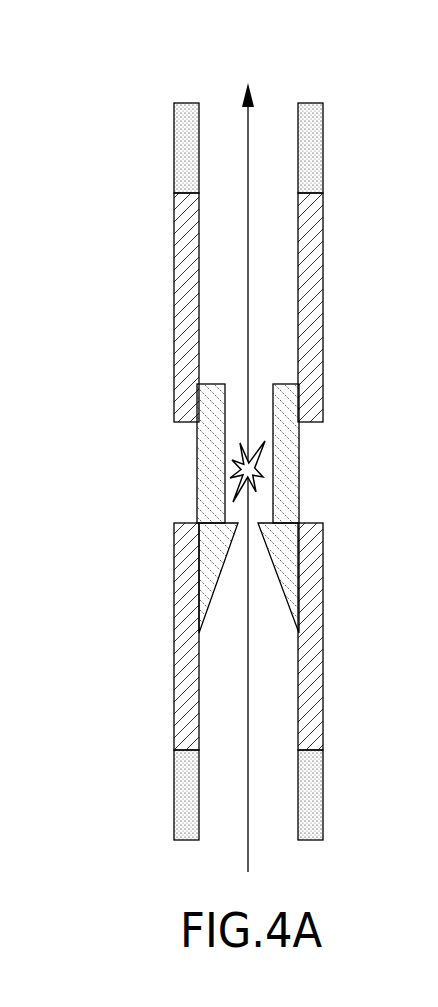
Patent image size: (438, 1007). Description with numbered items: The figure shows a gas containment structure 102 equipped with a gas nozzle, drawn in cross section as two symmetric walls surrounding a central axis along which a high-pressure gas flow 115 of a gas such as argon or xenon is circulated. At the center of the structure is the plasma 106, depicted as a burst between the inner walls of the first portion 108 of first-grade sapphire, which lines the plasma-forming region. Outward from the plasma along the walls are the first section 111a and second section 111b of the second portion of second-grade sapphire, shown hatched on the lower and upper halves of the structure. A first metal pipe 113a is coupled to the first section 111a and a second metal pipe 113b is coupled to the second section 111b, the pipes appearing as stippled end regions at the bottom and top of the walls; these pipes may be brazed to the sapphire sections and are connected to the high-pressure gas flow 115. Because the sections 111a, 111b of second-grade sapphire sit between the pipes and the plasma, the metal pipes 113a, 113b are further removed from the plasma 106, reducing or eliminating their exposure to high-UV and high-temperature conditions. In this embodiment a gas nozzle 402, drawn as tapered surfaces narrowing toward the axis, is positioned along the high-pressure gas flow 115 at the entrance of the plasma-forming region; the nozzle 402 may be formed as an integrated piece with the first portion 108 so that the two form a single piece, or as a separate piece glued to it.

The gas containment structure 102 is at (109, 63).
The plasma 106 is at (256, 466).
The first portion of first-grade sapphire 108 is at (197, 473).
The first section of second portion of second-grade sapphire 111a is at (175, 645).
The second section of second portion of second-grade sapphire 111b is at (175, 287).
The first metal pipe 113a is at (175, 795).
The second metal pipe 113b is at (175, 148).
The high-pressure gas flow 115 is at (248, 288).
The gas nozzle 402 is at (266, 567).